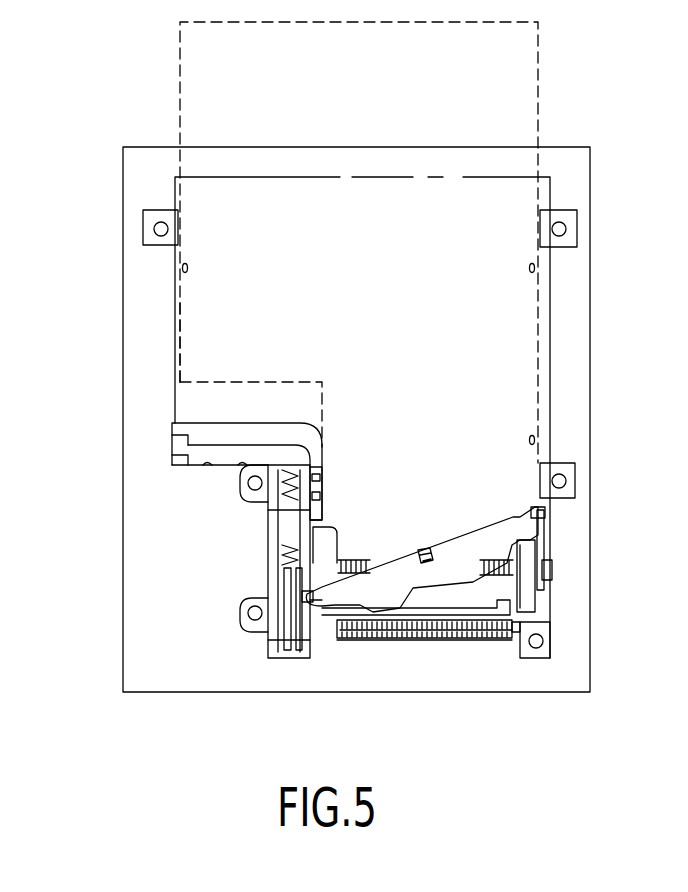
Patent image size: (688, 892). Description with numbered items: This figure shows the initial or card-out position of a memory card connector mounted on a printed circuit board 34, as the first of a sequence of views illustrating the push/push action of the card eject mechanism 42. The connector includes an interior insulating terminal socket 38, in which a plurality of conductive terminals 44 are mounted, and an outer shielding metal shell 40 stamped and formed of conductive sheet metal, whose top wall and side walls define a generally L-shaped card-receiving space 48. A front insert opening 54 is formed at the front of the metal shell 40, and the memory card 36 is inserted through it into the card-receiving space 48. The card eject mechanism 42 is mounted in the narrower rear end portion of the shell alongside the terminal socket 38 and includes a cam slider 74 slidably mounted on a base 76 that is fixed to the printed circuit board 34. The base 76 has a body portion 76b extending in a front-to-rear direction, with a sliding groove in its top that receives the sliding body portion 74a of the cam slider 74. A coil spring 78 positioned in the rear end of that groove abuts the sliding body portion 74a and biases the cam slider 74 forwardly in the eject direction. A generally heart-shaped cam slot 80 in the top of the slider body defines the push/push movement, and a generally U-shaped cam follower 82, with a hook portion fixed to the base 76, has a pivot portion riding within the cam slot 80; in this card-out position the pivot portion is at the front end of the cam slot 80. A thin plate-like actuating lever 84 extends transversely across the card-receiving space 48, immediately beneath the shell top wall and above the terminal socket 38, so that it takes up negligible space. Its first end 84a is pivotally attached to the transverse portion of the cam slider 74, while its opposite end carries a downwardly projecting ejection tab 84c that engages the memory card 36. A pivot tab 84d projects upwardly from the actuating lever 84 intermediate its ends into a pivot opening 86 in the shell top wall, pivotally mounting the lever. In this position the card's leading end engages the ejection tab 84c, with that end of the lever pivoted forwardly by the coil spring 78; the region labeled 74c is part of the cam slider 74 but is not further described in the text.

The printed circuit board 34 is at (523, 700).
The memory card 36 is at (548, 116).
The terminal socket 38 is at (540, 577).
The metal shell 40 is at (560, 365).
The card eject mechanism 42 is at (232, 547).
The conductive terminals 44 is at (447, 640).
The card-receiving space 48 is at (198, 327).
The front insert opening 54 is at (397, 177).
The cam slider 74 is at (264, 575).
The sliding body portion 74a is at (280, 630).
The slider upper end 74c is at (304, 512).
The base 76 is at (191, 474).
The body portion 76b is at (313, 597).
The coil spring 78 is at (283, 486).
The cam slot 80 is at (288, 630).
The cam follower 82 is at (303, 618).
The actuating lever 84 is at (470, 513).
The first end 84a is at (313, 612).
The ejection tab 84c is at (525, 537).
The pivot tab 84d is at (422, 547).
The pivot opening 86 is at (415, 568).